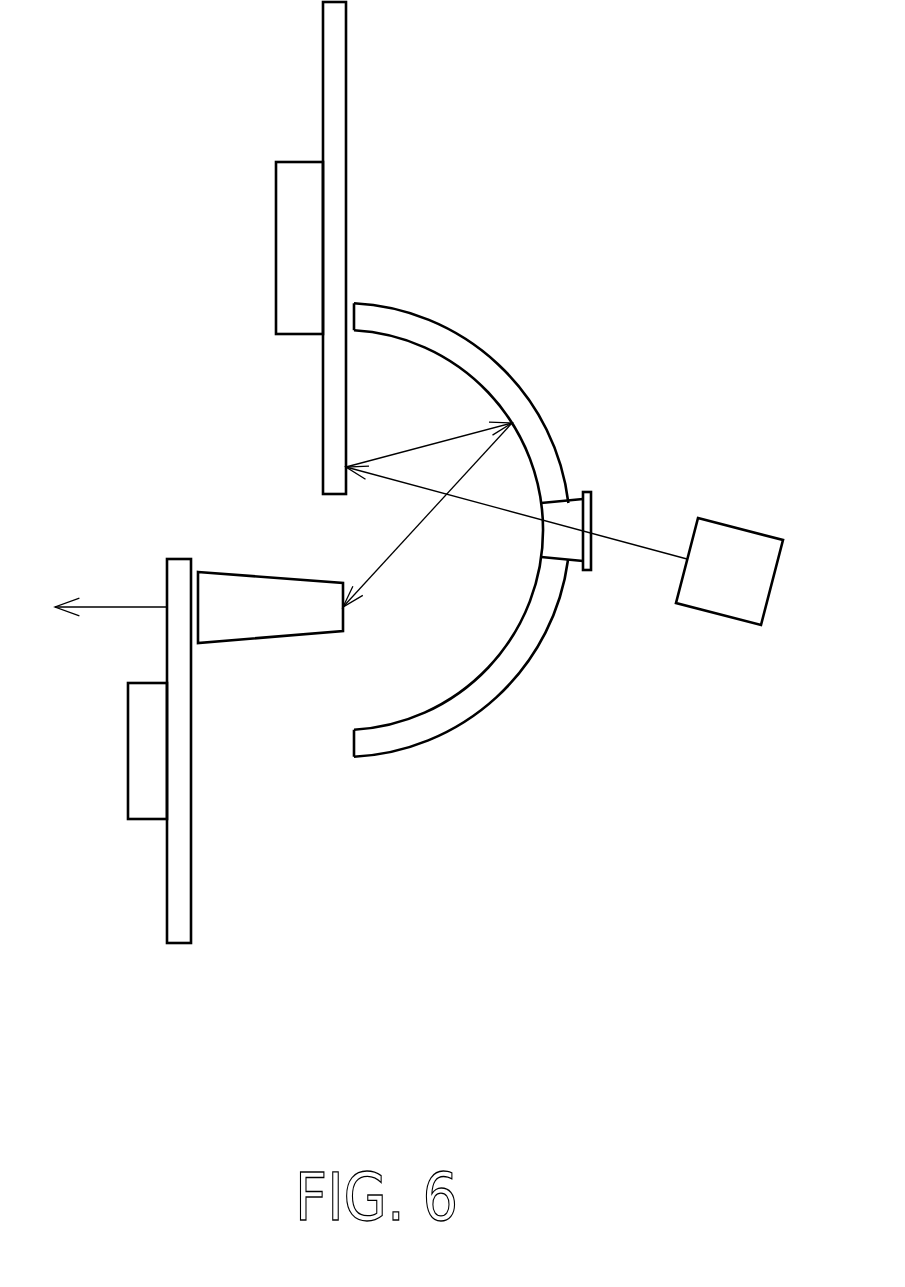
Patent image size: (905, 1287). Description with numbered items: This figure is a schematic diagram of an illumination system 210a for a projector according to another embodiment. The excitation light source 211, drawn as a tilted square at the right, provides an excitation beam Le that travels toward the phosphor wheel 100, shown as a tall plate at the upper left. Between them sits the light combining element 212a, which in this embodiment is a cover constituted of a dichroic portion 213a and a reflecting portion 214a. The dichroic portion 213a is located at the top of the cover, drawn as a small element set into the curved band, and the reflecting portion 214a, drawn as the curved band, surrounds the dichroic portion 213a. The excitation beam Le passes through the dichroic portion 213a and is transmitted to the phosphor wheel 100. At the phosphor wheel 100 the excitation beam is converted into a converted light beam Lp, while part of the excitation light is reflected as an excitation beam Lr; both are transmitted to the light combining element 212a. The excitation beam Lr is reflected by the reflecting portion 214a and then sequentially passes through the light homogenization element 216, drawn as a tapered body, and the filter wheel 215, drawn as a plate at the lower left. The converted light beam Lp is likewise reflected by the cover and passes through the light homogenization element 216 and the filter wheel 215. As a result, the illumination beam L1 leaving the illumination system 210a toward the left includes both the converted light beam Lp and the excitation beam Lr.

The phosphor wheel 100 is at (332, 72).
The illumination system 210a is at (430, 564).
The excitation light source 211 is at (725, 593).
The light combining element 212a is at (579, 529).
The dichroic portion 213a is at (570, 512).
The reflecting portion 214a is at (485, 370).
The filter wheel 215 is at (178, 898).
The light homogenization element 216 is at (264, 623).
The excitation beam Le is at (639, 547).
The converted light beam Lp is at (440, 396).
The reflected excitation beam Lr is at (428, 443).
The illumination beam L1 is at (120, 607).